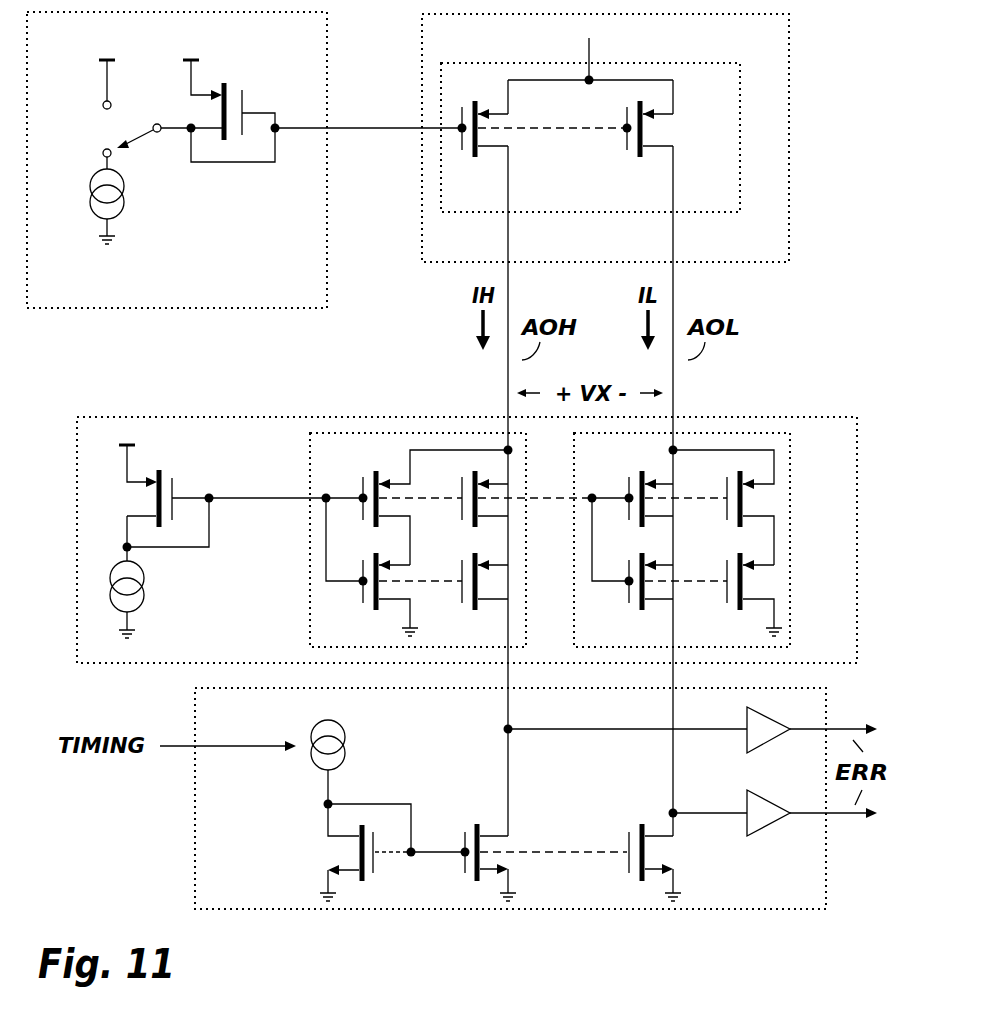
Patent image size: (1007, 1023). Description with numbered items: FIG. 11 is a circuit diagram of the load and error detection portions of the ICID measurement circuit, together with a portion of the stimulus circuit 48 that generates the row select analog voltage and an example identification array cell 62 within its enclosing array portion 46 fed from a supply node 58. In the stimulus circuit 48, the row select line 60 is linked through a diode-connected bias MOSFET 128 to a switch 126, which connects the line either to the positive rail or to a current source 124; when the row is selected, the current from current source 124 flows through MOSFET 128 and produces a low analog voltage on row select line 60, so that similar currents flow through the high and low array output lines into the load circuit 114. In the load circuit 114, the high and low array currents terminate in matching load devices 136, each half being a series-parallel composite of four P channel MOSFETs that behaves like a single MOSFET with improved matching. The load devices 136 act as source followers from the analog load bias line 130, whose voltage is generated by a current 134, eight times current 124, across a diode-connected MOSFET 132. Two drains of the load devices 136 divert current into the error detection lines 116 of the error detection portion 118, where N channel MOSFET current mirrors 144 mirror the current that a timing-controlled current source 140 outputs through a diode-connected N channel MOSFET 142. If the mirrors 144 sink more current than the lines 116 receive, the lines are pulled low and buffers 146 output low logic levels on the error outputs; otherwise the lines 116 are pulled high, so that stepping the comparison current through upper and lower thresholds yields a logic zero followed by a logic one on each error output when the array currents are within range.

The current mirror circuit 46 is at (778, 257).
The stimulus circuit 48 is at (305, 294).
The supply voltage node 58 is at (580, 52).
The ROW select line 60 is at (375, 120).
The identification array cell 62 is at (728, 207).
The load circuit 114 is at (853, 650).
The error detection lines 116 is at (670, 805).
The error detection circuit 118 is at (822, 897).
The current source 124 is at (83, 193).
The switch 126 is at (108, 130).
The diode-connected bias MOSFET 128 is at (258, 105).
The analog load bias voltage line 130 is at (288, 490).
The diode-connected MOSFET 132 is at (183, 490).
The current 134 is at (150, 592).
The load devices 136 is at (530, 606).
The current source 140 is at (360, 747).
The diode-connected N channel MOSFET 142 is at (330, 850).
The N channel MOSFET current mirrors 144 is at (602, 890).
The buffers 146 is at (737, 740).